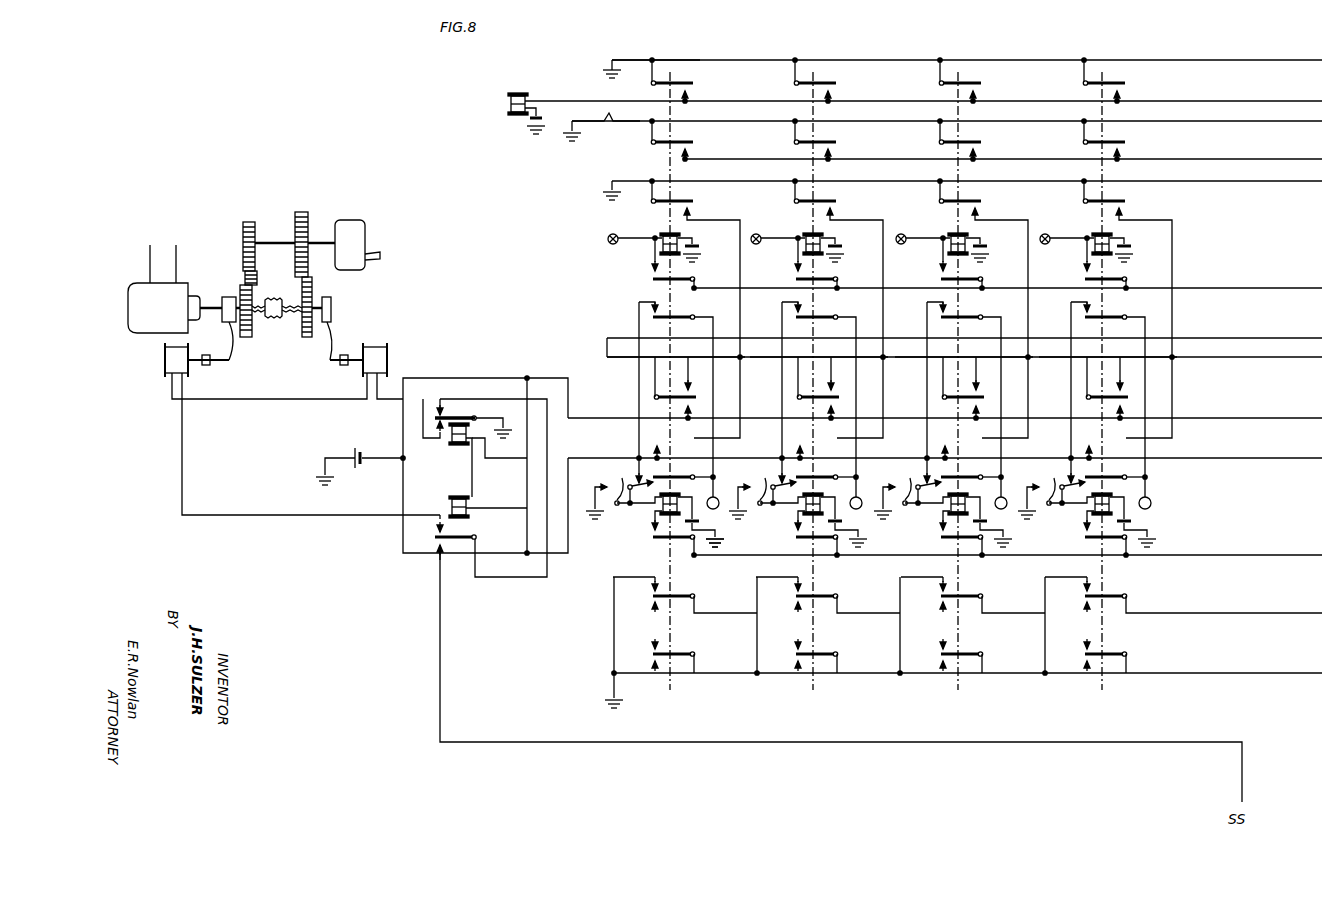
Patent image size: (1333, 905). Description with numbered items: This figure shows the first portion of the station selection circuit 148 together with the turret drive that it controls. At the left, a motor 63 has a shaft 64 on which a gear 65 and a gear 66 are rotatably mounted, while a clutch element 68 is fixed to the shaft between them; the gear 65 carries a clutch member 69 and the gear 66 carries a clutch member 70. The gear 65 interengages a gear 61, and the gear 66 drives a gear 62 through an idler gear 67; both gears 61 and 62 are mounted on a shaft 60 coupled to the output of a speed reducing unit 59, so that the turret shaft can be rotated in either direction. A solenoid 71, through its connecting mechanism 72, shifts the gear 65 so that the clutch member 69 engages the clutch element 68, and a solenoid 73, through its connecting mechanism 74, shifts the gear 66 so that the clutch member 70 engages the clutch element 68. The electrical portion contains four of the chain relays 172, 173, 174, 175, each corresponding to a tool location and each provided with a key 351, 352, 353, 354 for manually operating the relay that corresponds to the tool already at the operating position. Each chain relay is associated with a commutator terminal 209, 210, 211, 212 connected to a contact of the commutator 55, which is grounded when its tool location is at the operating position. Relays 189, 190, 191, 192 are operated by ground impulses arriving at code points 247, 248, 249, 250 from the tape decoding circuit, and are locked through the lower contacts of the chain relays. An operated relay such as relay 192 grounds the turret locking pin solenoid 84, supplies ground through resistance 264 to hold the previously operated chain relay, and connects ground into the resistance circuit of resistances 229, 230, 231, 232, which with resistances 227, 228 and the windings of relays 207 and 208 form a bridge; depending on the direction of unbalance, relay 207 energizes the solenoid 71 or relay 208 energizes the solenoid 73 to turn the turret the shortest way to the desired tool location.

The speed reducing unit 59 is at (345, 222).
The shaft 60 is at (273, 243).
The gear 61 is at (302, 213).
The gear 62 is at (247, 222).
The motor 63 is at (143, 285).
The shaft 64 is at (218, 300).
The gear 65 is at (303, 330).
The gear 66 is at (243, 340).
The idler gear 67 is at (247, 280).
The clutch element 68 is at (272, 298).
The clutch member 69 is at (300, 340).
The clutch member 70 is at (255, 338).
The solenoid 71 is at (387, 357).
The connecting mechanism 72 is at (330, 355).
The solenoid 73 is at (166, 357).
The connecting mechanism 74 is at (228, 355).
The turret locking pin solenoid 84 is at (519, 92).
The station selection circuit 148 is at (596, 227).
The relay 172 is at (647, 511).
The relay 173 is at (790, 511).
The relay 174 is at (935, 511).
The relay 175 is at (1079, 511).
The relay 189 is at (667, 233).
The relay 190 is at (810, 233).
The relay 191 is at (955, 233).
The relay 192 is at (1099, 233).
The relay 207 is at (458, 445).
The relay 208 is at (458, 497).
The commutator terminal 209 is at (715, 510).
The commutator terminal 210 is at (858, 510).
The commutator terminal 211 is at (1003, 510).
The commutator terminal 212 is at (1148, 510).
The resistance 227 is at (403, 488).
The resistance 228 is at (403, 416).
The resistance 229 is at (620, 357).
The resistance 230 is at (763, 357).
The resistance 231 is at (908, 357).
The resistance 232 is at (1052, 357).
The code point 247 is at (616, 245).
The code point 248 is at (759, 245).
The code point 249 is at (904, 245).
The code point 250 is at (1048, 245).
The resistance 264 is at (610, 128).
The key 351 is at (620, 478).
The key 352 is at (763, 478).
The key 353 is at (908, 478).
The key 354 is at (1052, 478).
The commutator 55 is at (871, 547).